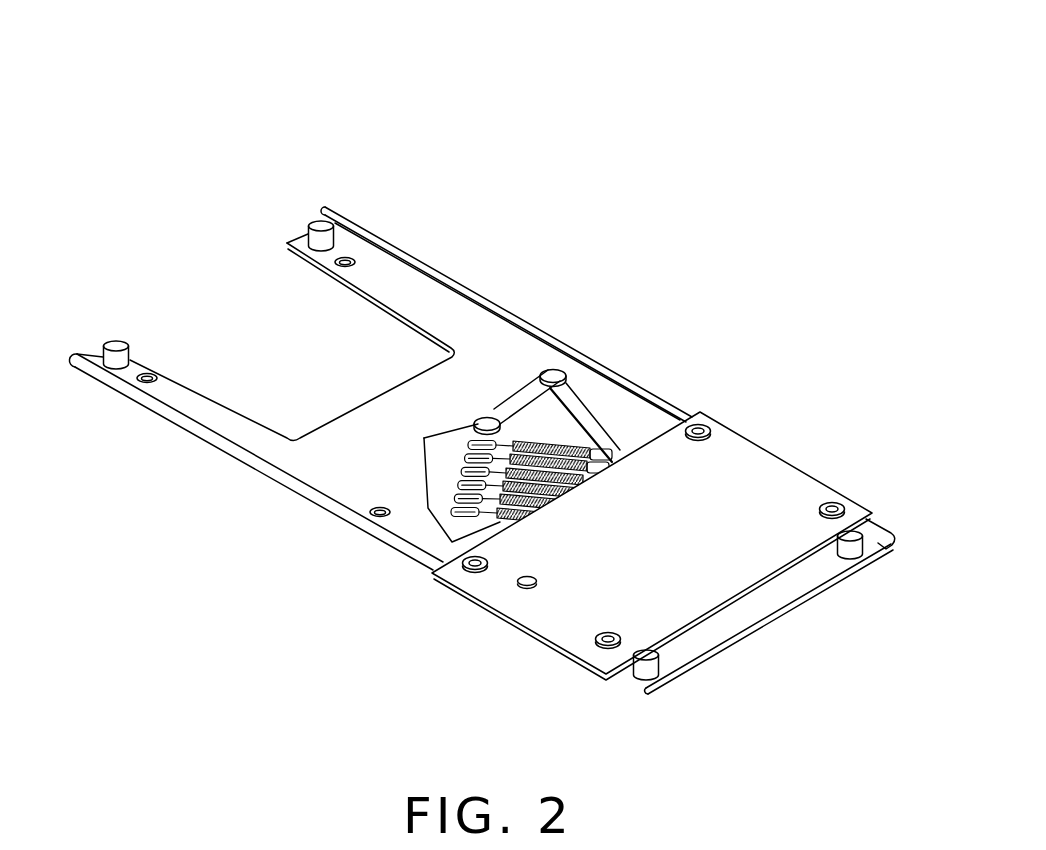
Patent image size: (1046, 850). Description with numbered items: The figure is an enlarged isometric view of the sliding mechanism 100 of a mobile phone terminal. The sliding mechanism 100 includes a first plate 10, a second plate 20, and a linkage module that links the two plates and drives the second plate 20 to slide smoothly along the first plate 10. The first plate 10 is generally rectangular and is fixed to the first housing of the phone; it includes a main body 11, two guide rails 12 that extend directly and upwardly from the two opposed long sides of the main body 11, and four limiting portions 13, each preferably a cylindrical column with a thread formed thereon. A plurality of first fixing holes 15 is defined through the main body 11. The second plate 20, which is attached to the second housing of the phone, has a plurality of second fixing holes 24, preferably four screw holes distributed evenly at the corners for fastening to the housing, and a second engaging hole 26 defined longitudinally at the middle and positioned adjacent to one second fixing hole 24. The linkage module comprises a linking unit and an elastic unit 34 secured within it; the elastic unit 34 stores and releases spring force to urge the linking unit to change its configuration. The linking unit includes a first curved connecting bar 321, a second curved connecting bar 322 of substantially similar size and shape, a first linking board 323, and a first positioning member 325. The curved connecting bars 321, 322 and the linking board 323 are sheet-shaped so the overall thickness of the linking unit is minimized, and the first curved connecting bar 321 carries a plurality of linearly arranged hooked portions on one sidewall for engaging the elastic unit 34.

The sliding mechanism 100 is at (505, 42).
The first plate 10 is at (303, 461).
The main body 11 is at (490, 355).
The guide rail 12 is at (877, 523).
The limiting portion 13 is at (320, 226).
The first fixing hole 15 is at (385, 238).
The second plate 20 is at (757, 479).
The second fixing hole 24 is at (703, 426).
The second engaging hole 26 is at (525, 588).
The first curved connecting bar 321 is at (472, 422).
The second curved connecting bar 322 is at (455, 531).
The first linking board 323 is at (507, 397).
The first positioning member 325 is at (557, 372).
The elastic unit 34 is at (600, 398).